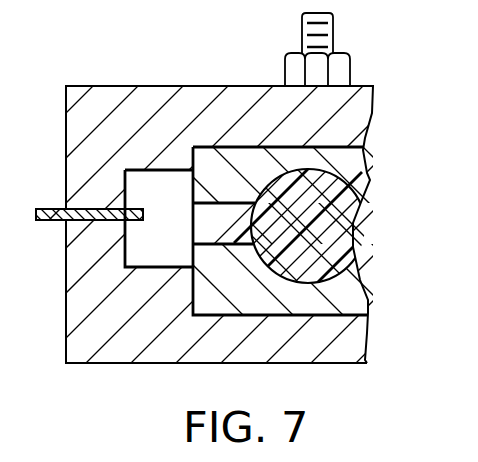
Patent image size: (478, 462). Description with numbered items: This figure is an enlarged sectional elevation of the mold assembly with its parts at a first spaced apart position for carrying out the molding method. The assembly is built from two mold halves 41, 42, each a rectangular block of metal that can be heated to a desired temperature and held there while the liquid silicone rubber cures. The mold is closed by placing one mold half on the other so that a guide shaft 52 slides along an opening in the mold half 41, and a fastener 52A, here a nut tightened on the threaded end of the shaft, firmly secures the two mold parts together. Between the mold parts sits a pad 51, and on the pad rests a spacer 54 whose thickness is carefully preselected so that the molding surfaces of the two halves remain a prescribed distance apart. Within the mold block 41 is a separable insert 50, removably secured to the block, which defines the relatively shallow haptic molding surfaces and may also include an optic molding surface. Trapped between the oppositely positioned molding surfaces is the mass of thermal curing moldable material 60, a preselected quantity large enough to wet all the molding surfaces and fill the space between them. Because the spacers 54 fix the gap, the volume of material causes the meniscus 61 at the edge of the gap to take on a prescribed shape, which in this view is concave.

The mold half 41 is at (135, 100).
The mold half 42 is at (128, 350).
The separable insert 50 is at (362, 172).
The pad 51 is at (55, 208).
The guide shaft 52 is at (302, 16).
The fastener 52A is at (346, 53).
The spacer 54 is at (43, 222).
The thermal curing moldable material 60 is at (360, 208).
The meniscus 61 is at (195, 222).